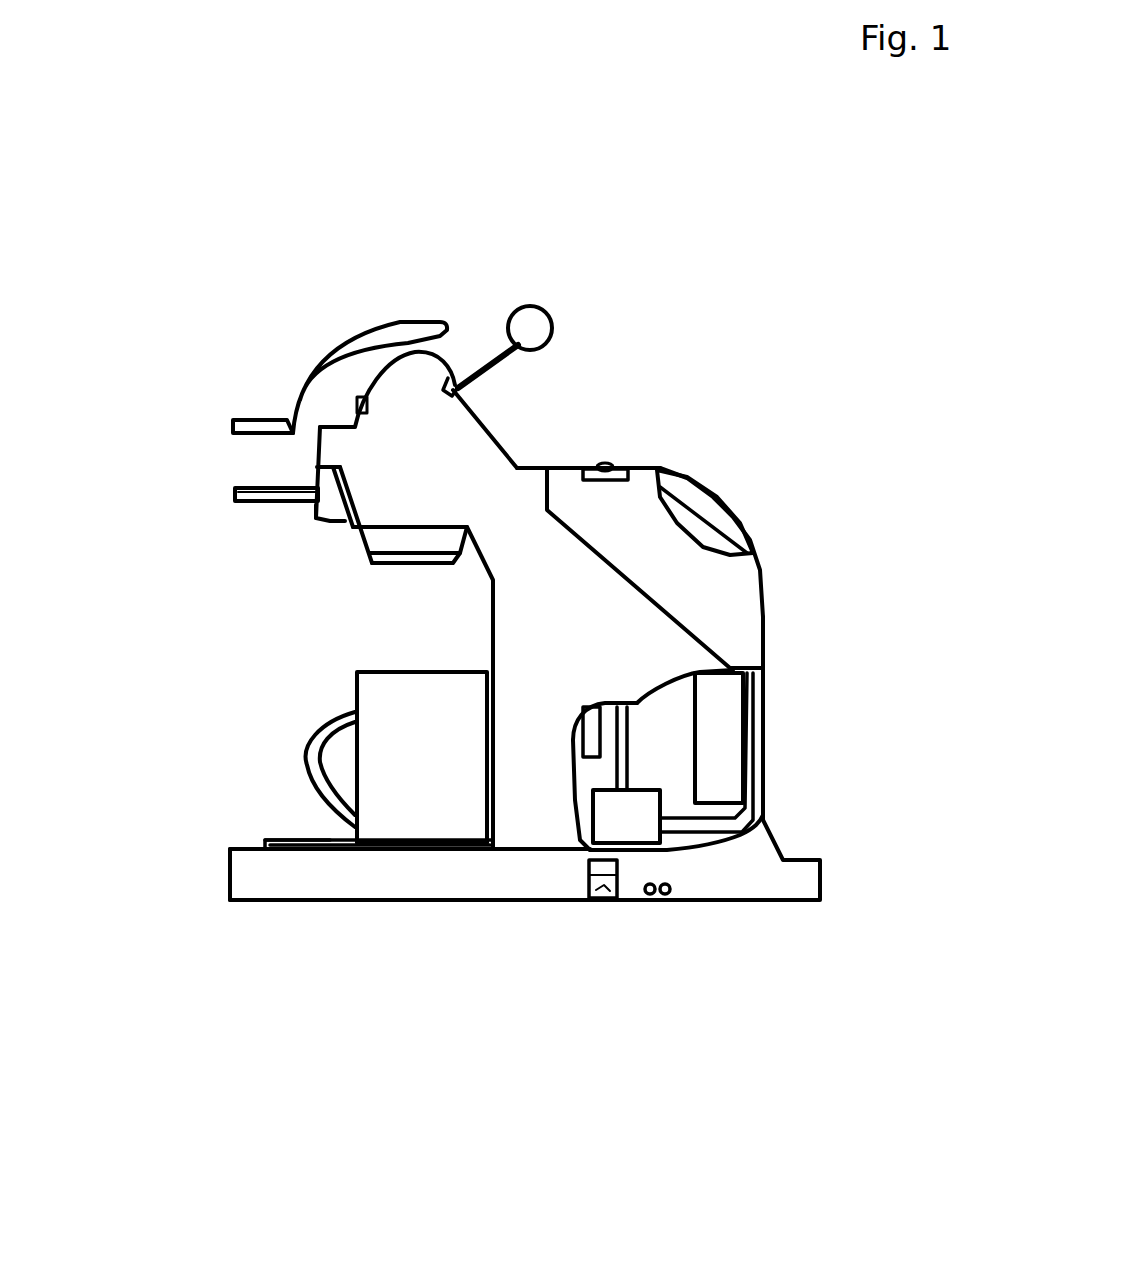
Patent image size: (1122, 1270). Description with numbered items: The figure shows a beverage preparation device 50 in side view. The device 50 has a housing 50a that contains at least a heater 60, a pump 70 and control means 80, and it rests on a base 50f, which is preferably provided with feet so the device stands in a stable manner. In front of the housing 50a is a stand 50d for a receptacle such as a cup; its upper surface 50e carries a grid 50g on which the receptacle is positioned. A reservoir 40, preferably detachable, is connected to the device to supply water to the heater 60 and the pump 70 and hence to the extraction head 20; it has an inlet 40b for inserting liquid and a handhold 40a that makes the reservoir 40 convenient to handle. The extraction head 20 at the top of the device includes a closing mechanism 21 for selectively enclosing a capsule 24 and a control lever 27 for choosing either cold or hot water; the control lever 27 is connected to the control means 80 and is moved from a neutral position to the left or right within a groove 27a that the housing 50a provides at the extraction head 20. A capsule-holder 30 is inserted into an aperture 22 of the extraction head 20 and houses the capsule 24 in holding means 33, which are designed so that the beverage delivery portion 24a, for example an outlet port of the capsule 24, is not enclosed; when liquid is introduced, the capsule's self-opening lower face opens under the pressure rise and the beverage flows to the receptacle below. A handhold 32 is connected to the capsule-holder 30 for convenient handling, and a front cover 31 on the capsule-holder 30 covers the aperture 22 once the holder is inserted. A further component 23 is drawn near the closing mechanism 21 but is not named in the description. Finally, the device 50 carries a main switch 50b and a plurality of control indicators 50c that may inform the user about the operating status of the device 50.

The extraction head 20 is at (433, 420).
The closing mechanism 21 is at (327, 360).
The aperture 22 is at (337, 505).
The locking arm 23 is at (330, 447).
The capsule 24 is at (373, 557).
The beverage delivery portion 24a is at (410, 567).
The control lever 27 is at (548, 322).
The groove 27a is at (456, 384).
The capsule-holder 30 is at (333, 500).
The front cover 31 is at (317, 477).
The handhold 32 is at (237, 487).
The holding means 33 is at (373, 535).
The reservoir 40 is at (728, 578).
The handhold 40a is at (715, 508).
The inlet 40b is at (630, 468).
The beverage preparation device 50 is at (630, 450).
The housing 50a is at (547, 820).
The main switch 50b is at (597, 900).
The control indicators 50c is at (650, 898).
The stand 50d is at (265, 882).
The upper surface 50e is at (307, 847).
The base 50f is at (393, 900).
The grid 50g is at (290, 839).
The heater 60 is at (732, 715).
The pump 70 is at (650, 835).
The control means 80 is at (583, 745).